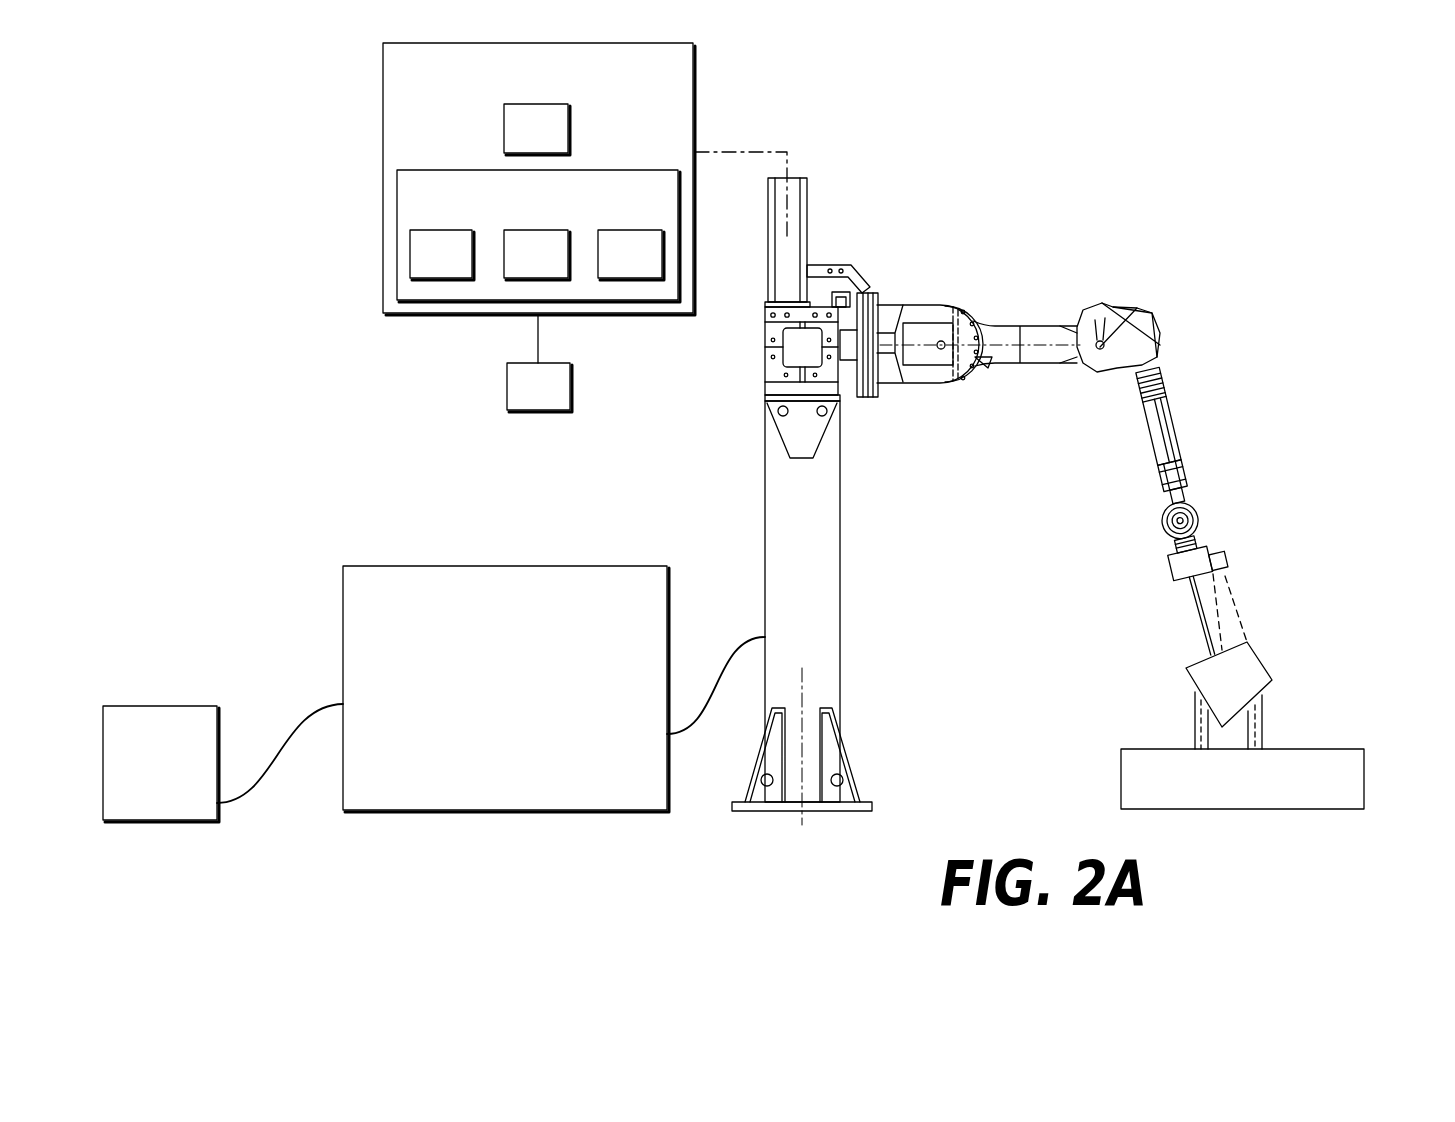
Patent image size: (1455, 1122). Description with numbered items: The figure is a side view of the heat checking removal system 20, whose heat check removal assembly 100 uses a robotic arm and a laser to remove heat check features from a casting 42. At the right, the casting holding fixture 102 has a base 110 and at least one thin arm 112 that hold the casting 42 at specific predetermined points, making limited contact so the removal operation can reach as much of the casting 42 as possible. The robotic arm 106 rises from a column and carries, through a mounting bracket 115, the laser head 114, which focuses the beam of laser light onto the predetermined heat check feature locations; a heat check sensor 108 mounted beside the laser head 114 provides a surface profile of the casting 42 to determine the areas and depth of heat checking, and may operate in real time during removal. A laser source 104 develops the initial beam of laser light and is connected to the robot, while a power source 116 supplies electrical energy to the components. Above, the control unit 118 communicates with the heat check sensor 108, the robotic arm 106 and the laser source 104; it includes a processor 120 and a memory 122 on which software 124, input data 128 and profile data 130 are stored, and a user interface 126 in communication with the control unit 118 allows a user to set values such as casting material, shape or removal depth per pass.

The heat checking removal system 20 is at (1330, 318).
The casting 42 is at (1276, 679).
The heat check removal assembly 100 is at (757, 416).
The casting holding fixture 102 is at (1366, 789).
The laser source 104 is at (513, 696).
The robotic arm 106 is at (1183, 460).
The heat check sensor 108 is at (1230, 563).
The base 110 is at (1138, 772).
The arm 112 is at (1198, 733).
The laser head 114 is at (1175, 572).
The mounting bracket 115 is at (1197, 545).
The power source 116 is at (174, 771).
The control unit 118 is at (552, 87).
The processor 120 is at (553, 141).
The memory 122 is at (552, 211).
The software 124 is at (458, 267).
The user interface 126 is at (555, 397).
The input data 128 is at (553, 267).
The profile data 130 is at (647, 267).